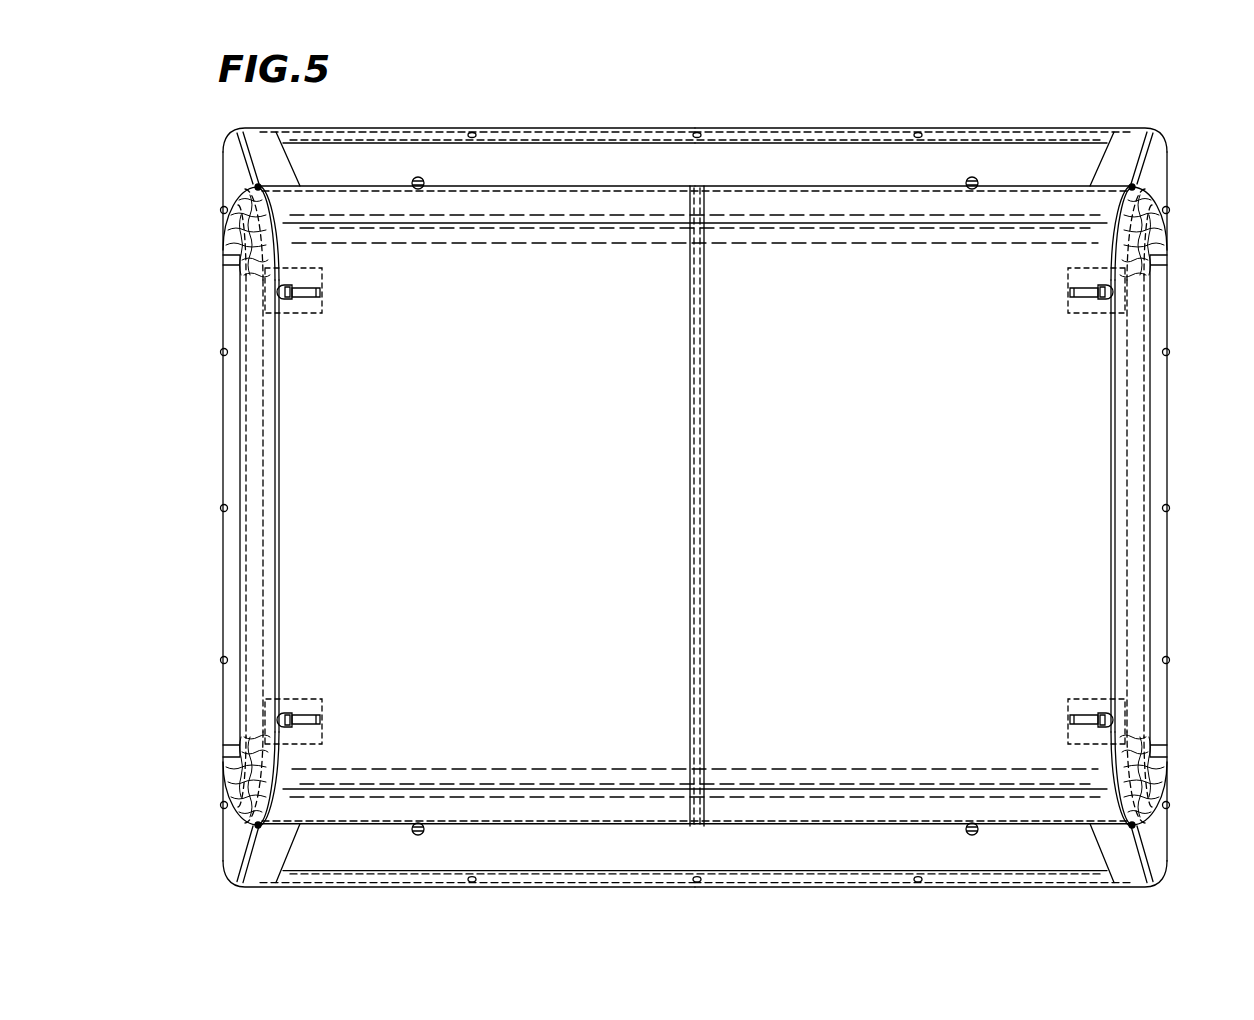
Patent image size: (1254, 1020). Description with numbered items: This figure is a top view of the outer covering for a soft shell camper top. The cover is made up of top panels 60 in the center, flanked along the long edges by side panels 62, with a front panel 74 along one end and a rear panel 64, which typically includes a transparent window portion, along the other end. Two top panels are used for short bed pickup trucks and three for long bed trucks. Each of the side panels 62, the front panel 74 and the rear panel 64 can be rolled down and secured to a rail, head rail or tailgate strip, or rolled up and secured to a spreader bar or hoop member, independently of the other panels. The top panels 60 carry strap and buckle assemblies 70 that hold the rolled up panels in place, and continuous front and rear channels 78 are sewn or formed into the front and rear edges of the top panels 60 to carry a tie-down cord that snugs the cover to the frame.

The top panels 60 is at (915, 471).
The side panels 62 is at (716, 176).
The rear panel 64 is at (1167, 591).
The strap and buckle assemblies 70 is at (290, 716).
The front panel 74 is at (222, 591).
The front and rear channels 78 is at (253, 405).